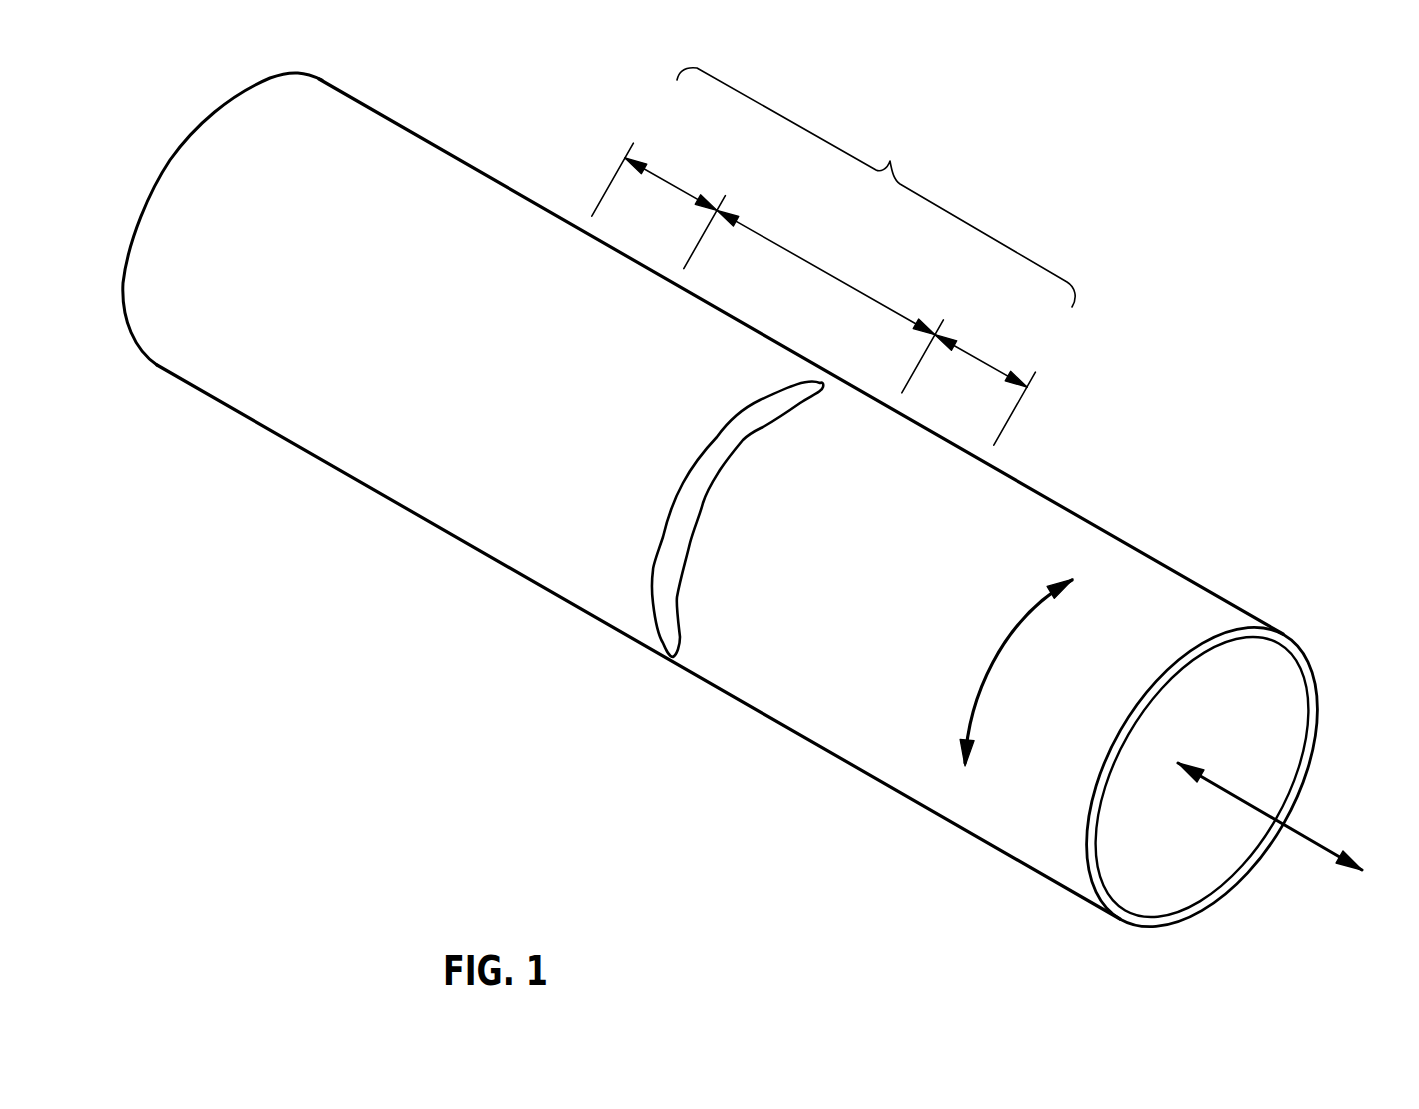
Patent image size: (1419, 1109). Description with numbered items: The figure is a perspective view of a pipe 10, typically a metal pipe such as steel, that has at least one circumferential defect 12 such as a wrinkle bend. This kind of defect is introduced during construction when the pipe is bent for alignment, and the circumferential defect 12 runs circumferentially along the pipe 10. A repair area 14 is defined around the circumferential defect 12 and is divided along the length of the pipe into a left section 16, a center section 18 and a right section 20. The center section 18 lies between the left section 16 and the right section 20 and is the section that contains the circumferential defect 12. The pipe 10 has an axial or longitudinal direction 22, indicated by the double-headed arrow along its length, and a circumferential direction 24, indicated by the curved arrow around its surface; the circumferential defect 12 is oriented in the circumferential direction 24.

The pipe 10 is at (1175, 570).
The circumferential defect 12 is at (670, 582).
The repair area 14 is at (876, 187).
The left section 16 is at (672, 181).
The center section 18 is at (858, 288).
The right section 20 is at (993, 367).
The axial direction 22 is at (1305, 840).
The circumferential direction 24 is at (977, 693).